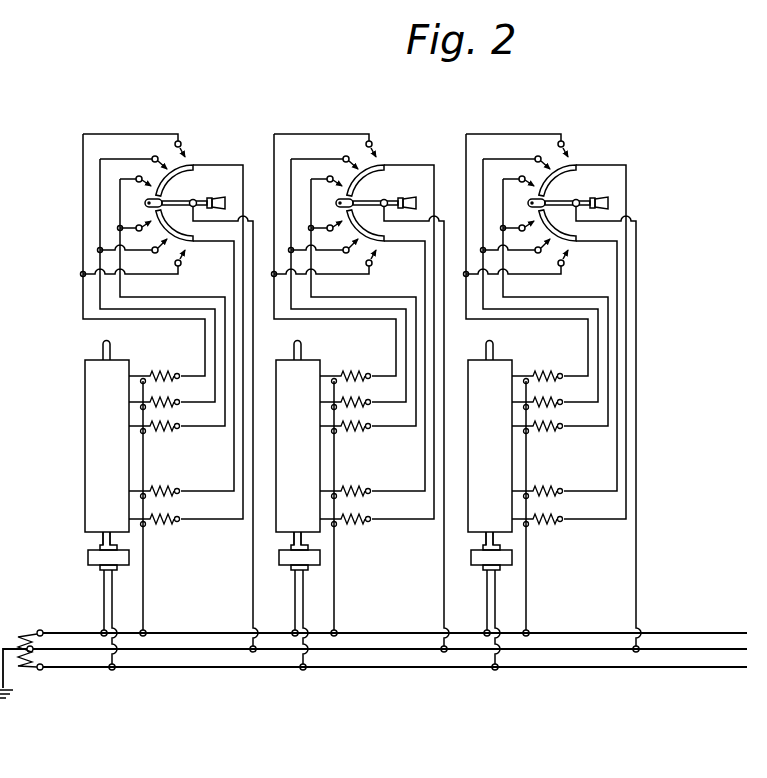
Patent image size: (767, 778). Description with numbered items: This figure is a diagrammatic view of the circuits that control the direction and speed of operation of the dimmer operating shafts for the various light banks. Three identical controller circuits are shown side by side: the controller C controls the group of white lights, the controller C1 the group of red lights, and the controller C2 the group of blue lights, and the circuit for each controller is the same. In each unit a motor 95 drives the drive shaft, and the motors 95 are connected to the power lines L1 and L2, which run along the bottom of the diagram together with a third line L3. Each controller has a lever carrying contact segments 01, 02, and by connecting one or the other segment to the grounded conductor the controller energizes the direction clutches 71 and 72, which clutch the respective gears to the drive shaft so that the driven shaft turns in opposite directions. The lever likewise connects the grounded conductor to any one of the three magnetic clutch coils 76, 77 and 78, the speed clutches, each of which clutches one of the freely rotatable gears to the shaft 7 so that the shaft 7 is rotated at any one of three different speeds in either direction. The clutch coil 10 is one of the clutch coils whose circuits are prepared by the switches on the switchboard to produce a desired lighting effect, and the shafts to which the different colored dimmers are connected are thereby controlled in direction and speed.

The shaft 7 is at (102, 351).
The upper contact segment 01 is at (196, 162).
The lower contact segment 02 is at (190, 246).
The magnetic clutch coil 78 is at (161, 373).
The magnetic clutch coil 77 is at (168, 400).
The magnetic clutch coil 76 is at (165, 430).
The clutch 71 is at (165, 488).
The clutch 72 is at (178, 513).
The clutch coil 10 is at (102, 540).
The motor 95 is at (87, 562).
The controller C is at (170, 394).
The controller C1 is at (361, 392).
The controller C2 is at (553, 392).
The power line L1 is at (50, 631).
The power line L2 is at (86, 670).
The supply line L3 is at (72, 647).